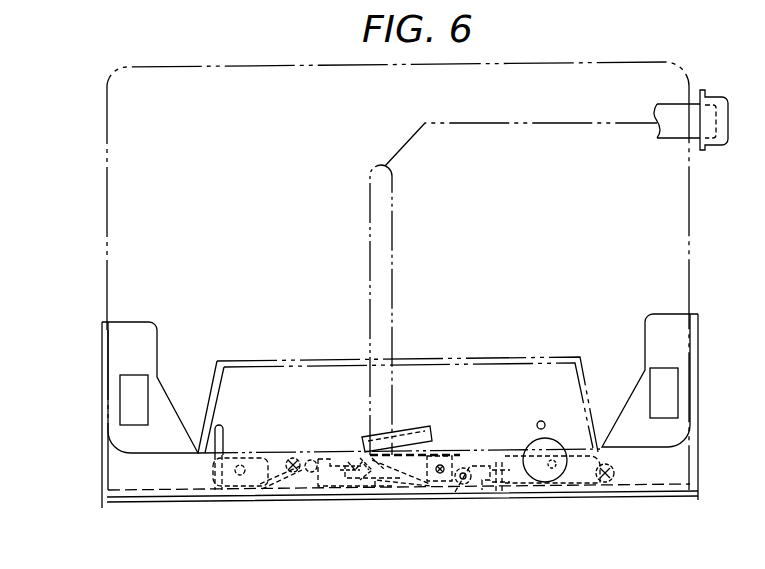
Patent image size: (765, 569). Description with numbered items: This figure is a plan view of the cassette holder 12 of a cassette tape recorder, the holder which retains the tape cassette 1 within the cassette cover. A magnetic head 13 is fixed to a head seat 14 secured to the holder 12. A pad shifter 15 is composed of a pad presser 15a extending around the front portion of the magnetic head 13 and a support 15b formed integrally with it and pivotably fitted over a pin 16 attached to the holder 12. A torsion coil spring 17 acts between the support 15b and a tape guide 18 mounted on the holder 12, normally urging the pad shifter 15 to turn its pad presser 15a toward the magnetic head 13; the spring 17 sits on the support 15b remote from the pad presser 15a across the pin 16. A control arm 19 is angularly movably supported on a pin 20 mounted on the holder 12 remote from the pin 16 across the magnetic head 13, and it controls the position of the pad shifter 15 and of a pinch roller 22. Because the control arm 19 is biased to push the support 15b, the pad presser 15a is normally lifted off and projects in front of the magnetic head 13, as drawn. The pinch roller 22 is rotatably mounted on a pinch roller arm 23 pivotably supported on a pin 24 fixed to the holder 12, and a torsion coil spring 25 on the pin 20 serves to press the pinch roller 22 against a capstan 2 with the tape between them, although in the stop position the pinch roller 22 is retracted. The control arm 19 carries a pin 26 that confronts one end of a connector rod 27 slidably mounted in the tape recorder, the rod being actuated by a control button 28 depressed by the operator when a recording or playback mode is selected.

The tape cassette 1 is at (133, 127).
The capstan 2 is at (541, 420).
The cassette holder 12 is at (122, 342).
The magnetic head 13 is at (404, 430).
The head seat 14 is at (365, 485).
The pad shifter 15 is at (376, 433).
The pad presser 15a is at (431, 428).
The support 15b is at (340, 482).
The pin 16 is at (300, 474).
The torsion coil spring 17 is at (272, 484).
The tape guide 18 is at (212, 457).
The control arm 19 is at (462, 455).
The pin 20 is at (460, 486).
The pinch roller 22 is at (557, 472).
The pinch roller arm 23 is at (593, 485).
The pin 24 is at (620, 484).
The torsion coil spring 25 is at (491, 484).
The pin 26 is at (396, 486).
The connector rod 27 is at (376, 197).
The control button 28 is at (721, 97).